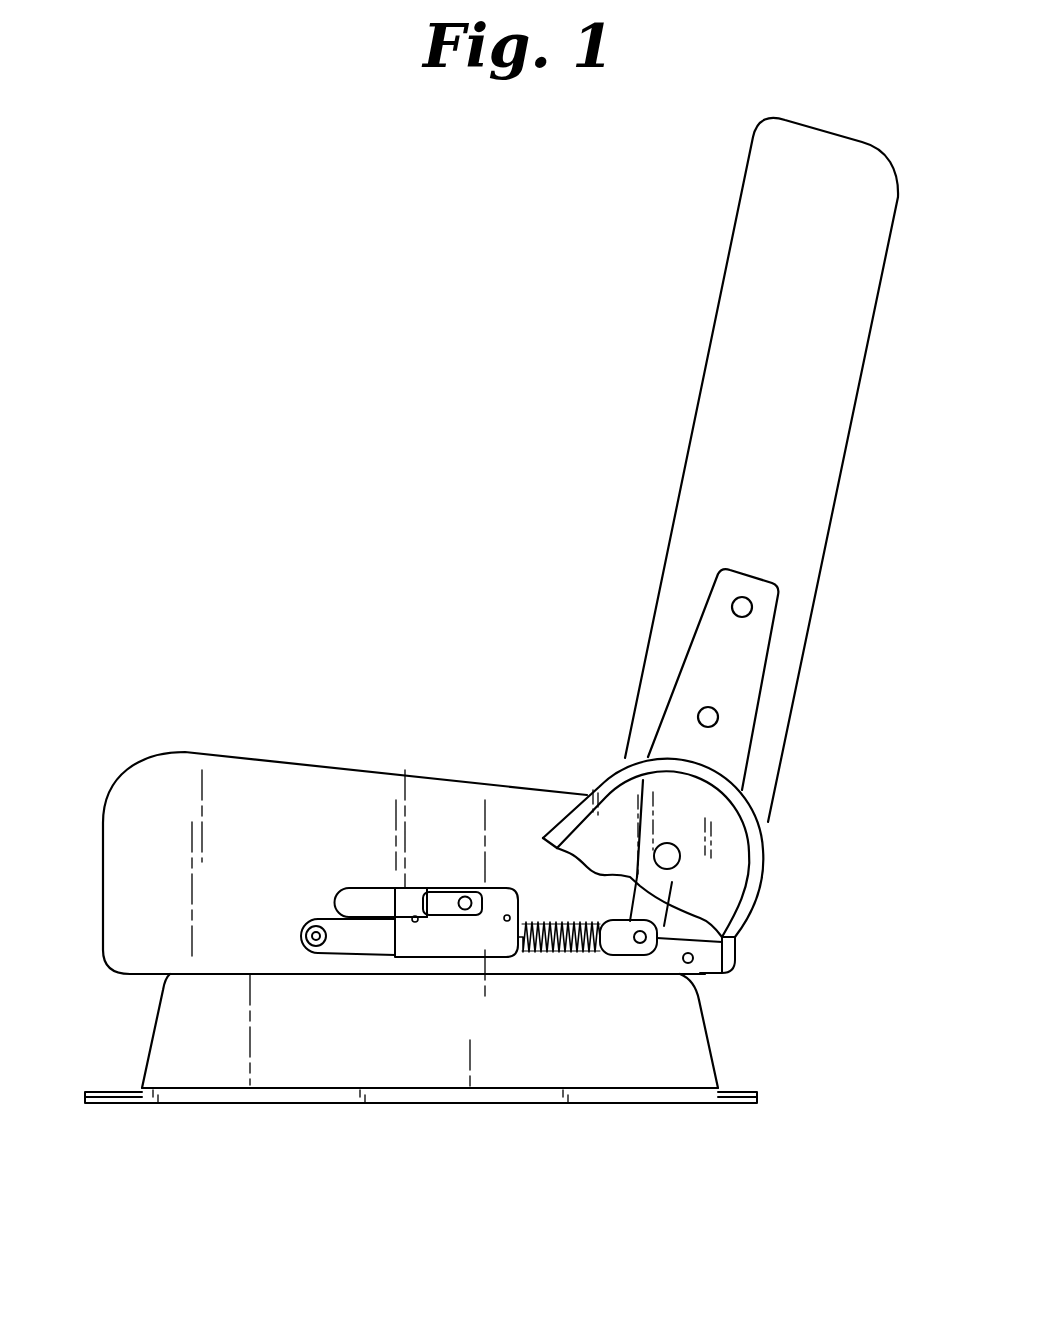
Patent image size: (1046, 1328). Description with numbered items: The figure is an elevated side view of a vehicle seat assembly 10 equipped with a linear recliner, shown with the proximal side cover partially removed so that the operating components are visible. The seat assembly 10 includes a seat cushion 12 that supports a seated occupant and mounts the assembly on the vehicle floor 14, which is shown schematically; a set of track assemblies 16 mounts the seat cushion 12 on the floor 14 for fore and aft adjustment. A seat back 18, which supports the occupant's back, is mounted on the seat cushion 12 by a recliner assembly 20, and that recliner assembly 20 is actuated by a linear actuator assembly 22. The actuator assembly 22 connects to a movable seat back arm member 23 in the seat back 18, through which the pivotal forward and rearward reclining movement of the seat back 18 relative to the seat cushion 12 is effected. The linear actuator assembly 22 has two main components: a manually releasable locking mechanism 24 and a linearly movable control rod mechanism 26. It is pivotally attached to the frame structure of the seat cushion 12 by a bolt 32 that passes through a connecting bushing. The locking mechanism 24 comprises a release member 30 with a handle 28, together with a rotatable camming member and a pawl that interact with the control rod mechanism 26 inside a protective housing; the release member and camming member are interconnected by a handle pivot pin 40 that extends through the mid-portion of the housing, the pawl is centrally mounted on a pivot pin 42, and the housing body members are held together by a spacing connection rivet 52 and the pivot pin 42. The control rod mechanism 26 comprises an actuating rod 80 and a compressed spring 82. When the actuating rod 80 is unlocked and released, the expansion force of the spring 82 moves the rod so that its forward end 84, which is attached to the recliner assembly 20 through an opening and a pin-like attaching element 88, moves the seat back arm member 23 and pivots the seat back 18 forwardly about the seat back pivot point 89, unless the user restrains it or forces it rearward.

The vehicle seat assembly 10 is at (435, 613).
The seat cushion 12 is at (125, 867).
The vehicle floor 14 is at (440, 1128).
The track assemblies 16 is at (223, 1097).
The seat back 18 is at (827, 443).
The recliner assembly 20 is at (753, 845).
The linear actuator assembly 22 is at (348, 842).
The seat back arm member 23 is at (643, 902).
The locking mechanism 24 is at (408, 935).
The control rod mechanism 26 is at (550, 958).
The handle 28 is at (337, 897).
The release member 30 is at (440, 912).
The bolt 32 is at (305, 937).
The handle pivot pin 40 is at (465, 896).
The pivot pin 42 is at (415, 923).
The spacing connection rivet 52 is at (507, 922).
The actuating rod 80 is at (607, 955).
The compressed spring 82 is at (578, 955).
The forward end 84 is at (618, 956).
The pin-like attaching element 88 is at (737, 962).
The seat back pivot point 89 is at (680, 858).